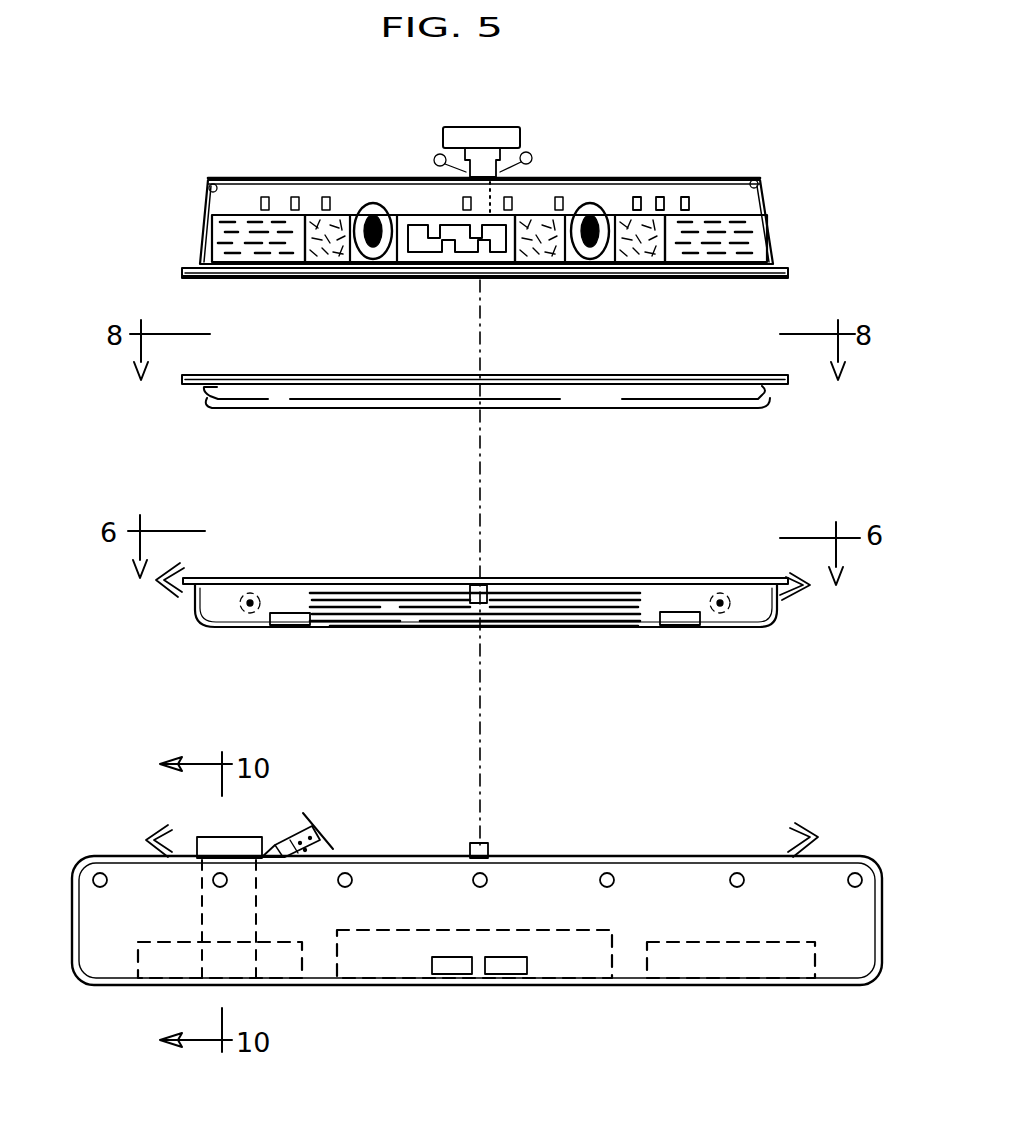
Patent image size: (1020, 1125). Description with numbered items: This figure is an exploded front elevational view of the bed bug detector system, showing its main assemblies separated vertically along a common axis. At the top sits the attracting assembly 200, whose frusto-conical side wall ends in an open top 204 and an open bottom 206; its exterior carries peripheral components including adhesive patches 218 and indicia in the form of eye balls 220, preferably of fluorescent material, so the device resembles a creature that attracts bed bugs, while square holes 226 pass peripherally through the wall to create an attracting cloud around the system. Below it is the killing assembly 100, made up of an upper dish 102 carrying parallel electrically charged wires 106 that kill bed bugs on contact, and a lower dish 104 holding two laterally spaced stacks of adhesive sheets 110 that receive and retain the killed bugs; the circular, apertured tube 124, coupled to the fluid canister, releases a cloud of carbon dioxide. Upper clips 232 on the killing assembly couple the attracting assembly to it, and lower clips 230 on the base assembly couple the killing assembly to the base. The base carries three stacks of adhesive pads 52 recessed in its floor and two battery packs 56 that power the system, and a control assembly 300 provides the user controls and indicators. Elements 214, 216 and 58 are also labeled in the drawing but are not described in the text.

The killing assembly 100 is at (132, 272).
The upper dish 102 is at (283, 400).
The lower dish 104 is at (228, 630).
The parallel electrically charged wires 106 is at (330, 376).
The adhesive sheets 110 is at (470, 630).
The tube 124 is at (258, 596).
The attracting assembly 200 is at (870, 110).
The open top 204 is at (300, 180).
The open bottom 206 is at (232, 280).
The connector 214 is at (460, 255).
The pad 216 is at (326, 262).
The adhesive patches 218 is at (225, 245).
The eye balls 220 is at (590, 205).
The square holes 226 is at (637, 197).
The lower clips 230 is at (155, 835).
The upper clips 232 is at (170, 595).
The control assembly 300 is at (612, 787).
The stacks of adhesive pads 52 is at (400, 960).
The battery packs 56 is at (173, 962).
The slot 58 is at (510, 975).